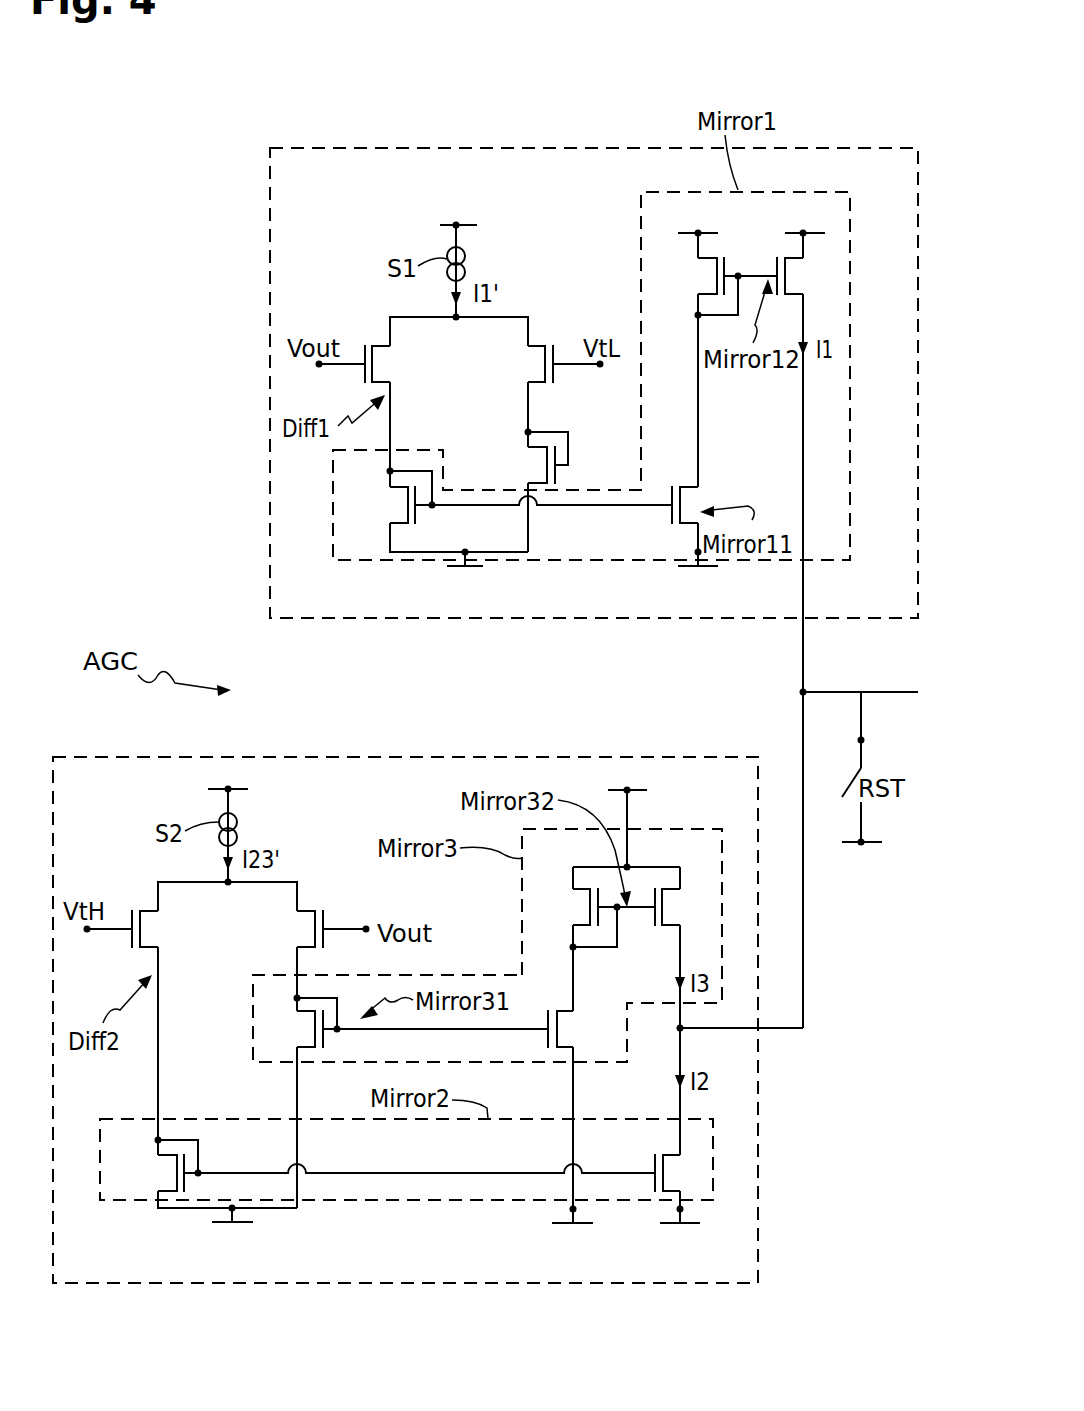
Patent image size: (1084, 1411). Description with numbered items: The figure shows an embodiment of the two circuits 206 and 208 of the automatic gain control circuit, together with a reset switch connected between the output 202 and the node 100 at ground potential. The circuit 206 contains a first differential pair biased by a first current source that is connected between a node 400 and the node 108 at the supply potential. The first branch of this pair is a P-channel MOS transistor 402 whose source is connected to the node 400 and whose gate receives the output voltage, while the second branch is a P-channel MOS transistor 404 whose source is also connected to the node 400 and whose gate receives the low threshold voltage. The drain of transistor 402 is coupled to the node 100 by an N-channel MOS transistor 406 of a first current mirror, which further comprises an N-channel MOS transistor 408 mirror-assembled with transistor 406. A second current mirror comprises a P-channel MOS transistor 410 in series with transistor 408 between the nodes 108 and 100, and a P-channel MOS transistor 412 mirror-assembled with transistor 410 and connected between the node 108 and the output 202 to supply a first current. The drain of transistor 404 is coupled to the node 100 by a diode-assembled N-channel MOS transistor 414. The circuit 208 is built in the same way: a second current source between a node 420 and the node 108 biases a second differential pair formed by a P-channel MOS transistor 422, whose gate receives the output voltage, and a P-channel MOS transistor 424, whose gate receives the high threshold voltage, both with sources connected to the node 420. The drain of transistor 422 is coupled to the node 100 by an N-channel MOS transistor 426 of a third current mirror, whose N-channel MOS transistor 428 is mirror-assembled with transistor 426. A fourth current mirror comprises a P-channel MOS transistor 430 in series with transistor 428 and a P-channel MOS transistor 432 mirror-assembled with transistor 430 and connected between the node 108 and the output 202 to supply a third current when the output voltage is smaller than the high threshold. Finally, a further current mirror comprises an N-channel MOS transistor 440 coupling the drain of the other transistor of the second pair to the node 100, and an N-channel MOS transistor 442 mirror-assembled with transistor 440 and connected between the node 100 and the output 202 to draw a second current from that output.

The node at potential GND 100 is at (464, 550).
The node at potential Vdd 108 is at (462, 230).
The output 202 is at (877, 692).
The circuit 206 is at (270, 490).
The circuit 208 is at (357, 757).
The node 400 is at (452, 316).
The MOS transistor 402 is at (380, 366).
The MOS transistor 404 is at (527, 381).
The MOS transistor 406 is at (403, 500).
The MOS transistor 408 is at (688, 506).
The MOS transistor 410 is at (703, 274).
The MOS transistor 412 is at (793, 275).
The diode-assembled MOS transistor 414 is at (537, 468).
The node 420 is at (225, 881).
The MOS transistor 422 is at (303, 942).
The MOS transistor 424 is at (146, 930).
The MOS transistor 426 is at (310, 1027).
The MOS transistor 428 is at (565, 1032).
The MOS transistor 430 is at (577, 912).
The MOS transistor 432 is at (669, 909).
The MOS transistor 440 is at (160, 1173).
The MOS transistor 442 is at (675, 1177).